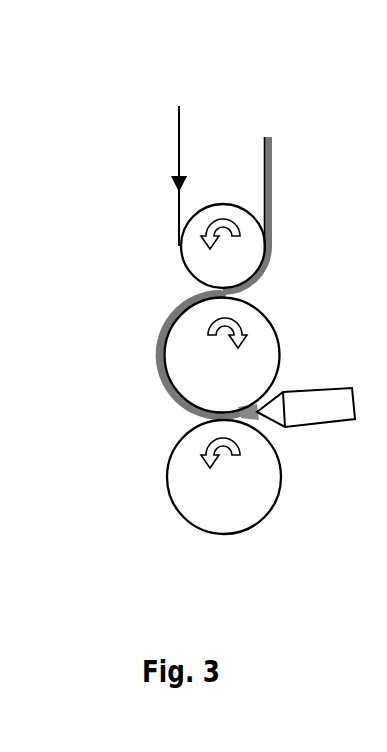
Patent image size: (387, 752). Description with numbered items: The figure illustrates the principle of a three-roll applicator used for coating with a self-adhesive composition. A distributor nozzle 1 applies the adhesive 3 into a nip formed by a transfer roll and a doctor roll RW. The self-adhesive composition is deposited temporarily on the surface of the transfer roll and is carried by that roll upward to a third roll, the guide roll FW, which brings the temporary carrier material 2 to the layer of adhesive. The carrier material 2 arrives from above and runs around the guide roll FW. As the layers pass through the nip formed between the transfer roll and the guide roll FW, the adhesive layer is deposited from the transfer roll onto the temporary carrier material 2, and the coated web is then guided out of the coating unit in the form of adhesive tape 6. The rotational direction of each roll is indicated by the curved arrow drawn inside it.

The distributor nozzle 1 is at (307, 403).
The temporary carrier material 2 is at (182, 133).
The adhesive 3 is at (180, 398).
The adhesive tape 6 is at (280, 179).
The guide roll FW is at (197, 252).
The doctor roll RW is at (198, 483).